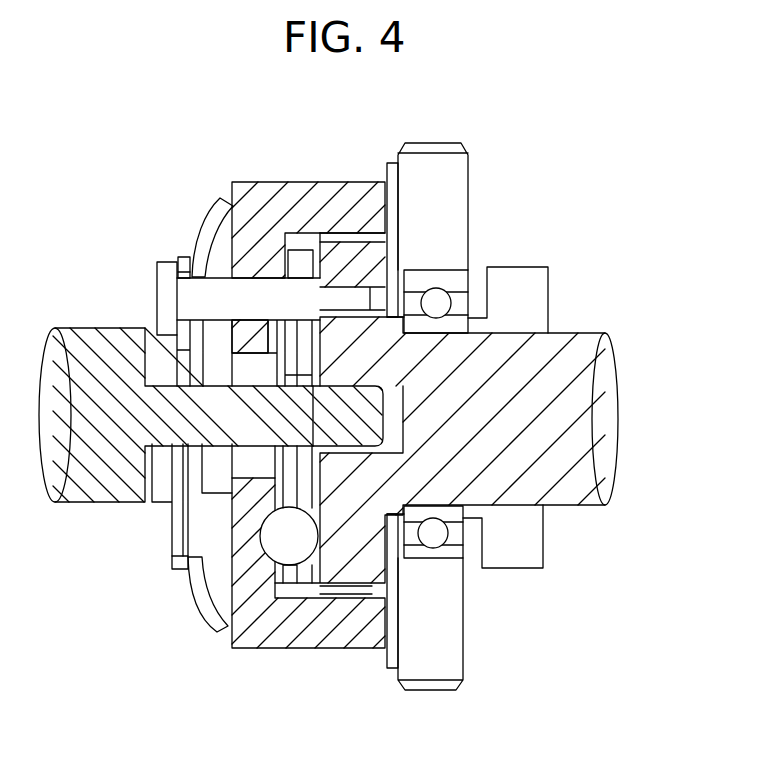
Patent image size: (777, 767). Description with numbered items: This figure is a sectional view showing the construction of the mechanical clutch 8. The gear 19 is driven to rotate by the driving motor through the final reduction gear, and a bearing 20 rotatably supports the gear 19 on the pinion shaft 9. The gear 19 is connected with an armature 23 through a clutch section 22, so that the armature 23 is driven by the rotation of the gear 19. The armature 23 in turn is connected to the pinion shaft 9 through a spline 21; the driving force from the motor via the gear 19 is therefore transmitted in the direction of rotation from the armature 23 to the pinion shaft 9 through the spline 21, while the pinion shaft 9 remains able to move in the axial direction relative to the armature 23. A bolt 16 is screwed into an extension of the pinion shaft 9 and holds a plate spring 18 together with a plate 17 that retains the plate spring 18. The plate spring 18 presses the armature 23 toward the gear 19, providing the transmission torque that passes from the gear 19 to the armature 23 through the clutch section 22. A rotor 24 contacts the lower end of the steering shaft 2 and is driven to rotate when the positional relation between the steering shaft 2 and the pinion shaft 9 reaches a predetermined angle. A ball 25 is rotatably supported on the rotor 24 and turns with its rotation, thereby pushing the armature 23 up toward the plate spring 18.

The steering shaft 2 is at (68, 347).
The mechanical clutch 8 is at (213, 197).
The pinion shaft 9 is at (582, 348).
The bolt 16 is at (168, 298).
The plate 17 is at (182, 258).
The plate spring 18 is at (205, 235).
The gear 19 is at (460, 190).
The bearing 20 is at (467, 282).
The spline 21 is at (327, 232).
The clutch section 22 is at (388, 205).
The armature 23 is at (262, 192).
The rotor 24 is at (300, 577).
The ball 25 is at (275, 537).